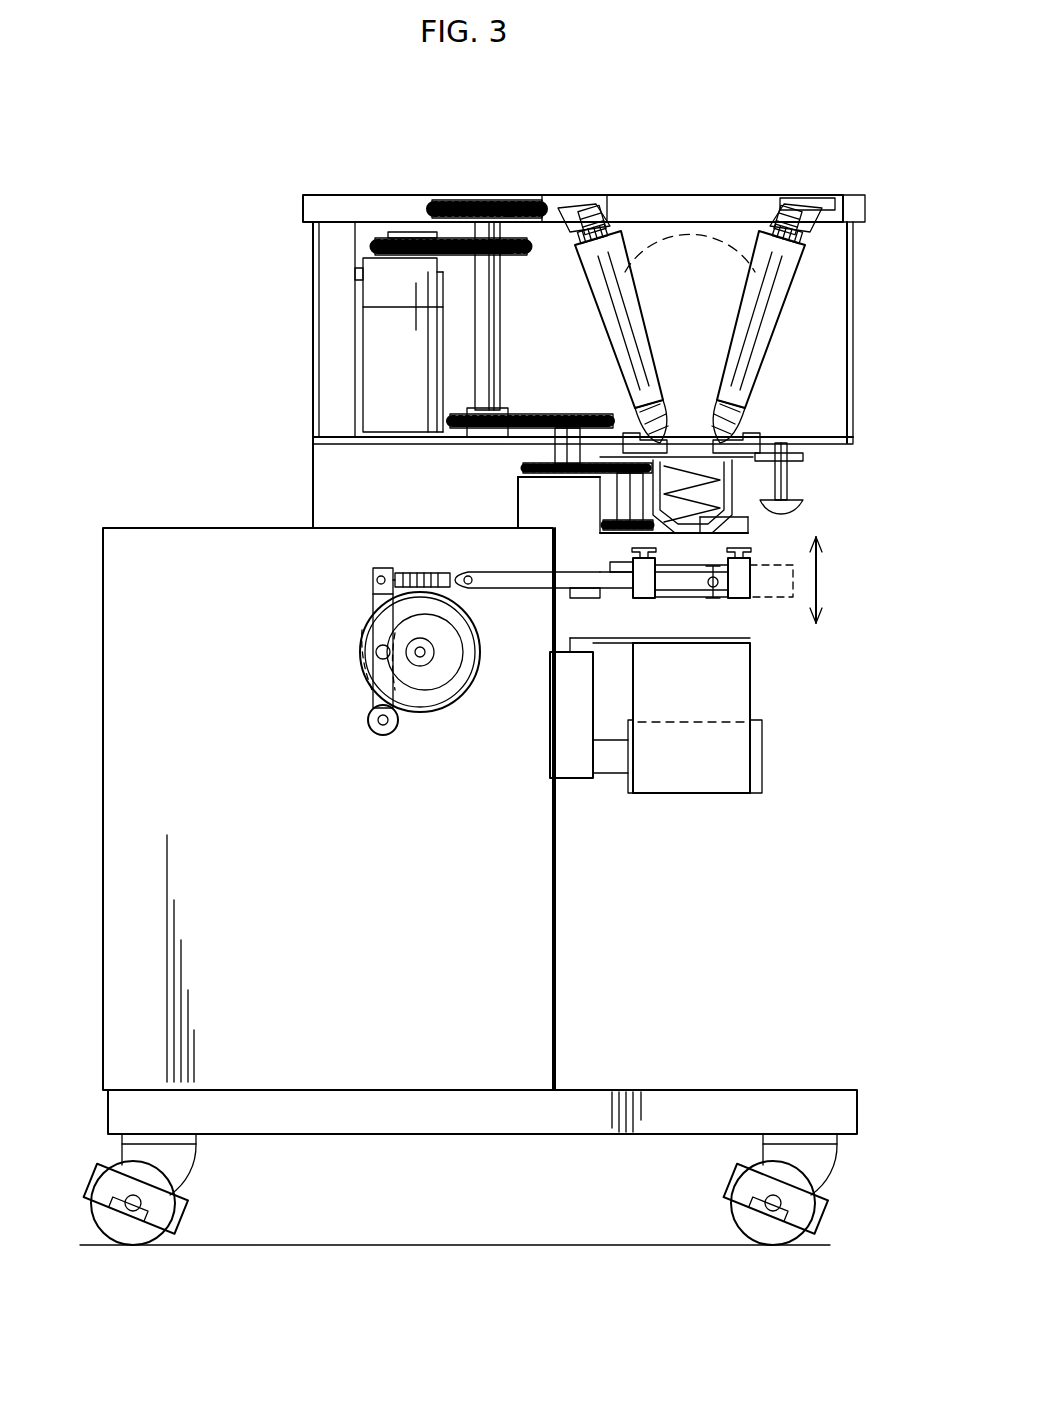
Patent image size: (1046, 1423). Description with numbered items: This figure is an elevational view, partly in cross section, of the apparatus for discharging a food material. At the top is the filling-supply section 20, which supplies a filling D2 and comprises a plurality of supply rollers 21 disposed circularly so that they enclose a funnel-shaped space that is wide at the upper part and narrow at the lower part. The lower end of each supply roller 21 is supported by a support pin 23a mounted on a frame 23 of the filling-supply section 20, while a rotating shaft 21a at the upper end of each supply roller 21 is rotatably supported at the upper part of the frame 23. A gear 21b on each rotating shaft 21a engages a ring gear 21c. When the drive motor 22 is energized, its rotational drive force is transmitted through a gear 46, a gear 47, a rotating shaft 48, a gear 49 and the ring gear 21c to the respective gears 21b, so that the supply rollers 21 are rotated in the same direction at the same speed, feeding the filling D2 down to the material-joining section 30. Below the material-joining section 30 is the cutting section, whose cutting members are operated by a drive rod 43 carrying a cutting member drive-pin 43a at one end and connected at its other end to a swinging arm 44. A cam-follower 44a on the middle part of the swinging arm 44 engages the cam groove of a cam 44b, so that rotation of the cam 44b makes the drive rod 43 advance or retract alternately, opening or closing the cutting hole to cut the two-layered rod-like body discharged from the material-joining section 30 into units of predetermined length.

The filling-supply section 20 is at (920, 367).
The supply roller 21 is at (604, 342).
The rotating shaft 21a is at (592, 210).
The gear 21b is at (580, 218).
The ring gear 21c is at (608, 205).
The filling D2 is at (716, 245).
The drive motor 22 is at (380, 384).
The frame 23 is at (830, 446).
The support pin 23a is at (672, 445).
The material-joining section 30 is at (765, 522).
The drive rod 43 is at (515, 592).
The cutting member drive-pin 43a is at (722, 598).
The swinging arm 44 is at (378, 608).
The cam-follower 44a is at (376, 650).
The cam 44b is at (430, 704).
The gear 46 is at (375, 246).
The gear 47 is at (516, 252).
The rotating shaft 48 is at (490, 312).
The gear 49 is at (456, 200).